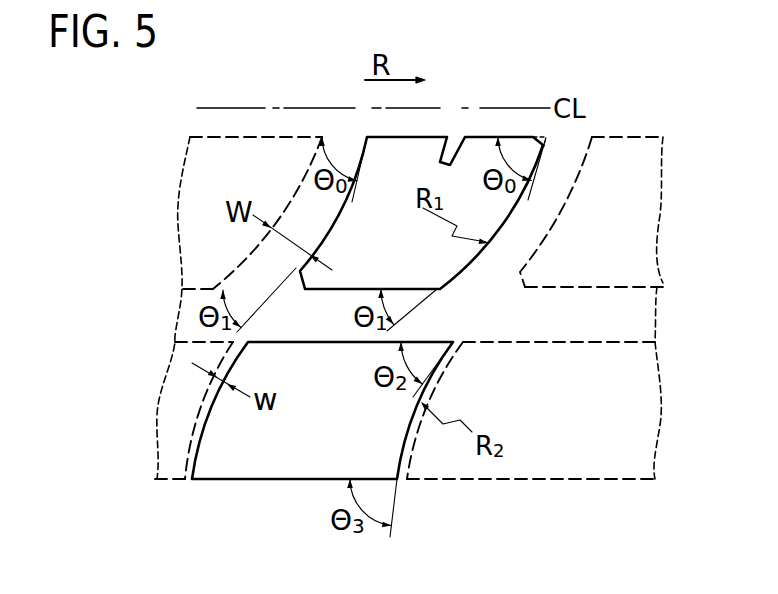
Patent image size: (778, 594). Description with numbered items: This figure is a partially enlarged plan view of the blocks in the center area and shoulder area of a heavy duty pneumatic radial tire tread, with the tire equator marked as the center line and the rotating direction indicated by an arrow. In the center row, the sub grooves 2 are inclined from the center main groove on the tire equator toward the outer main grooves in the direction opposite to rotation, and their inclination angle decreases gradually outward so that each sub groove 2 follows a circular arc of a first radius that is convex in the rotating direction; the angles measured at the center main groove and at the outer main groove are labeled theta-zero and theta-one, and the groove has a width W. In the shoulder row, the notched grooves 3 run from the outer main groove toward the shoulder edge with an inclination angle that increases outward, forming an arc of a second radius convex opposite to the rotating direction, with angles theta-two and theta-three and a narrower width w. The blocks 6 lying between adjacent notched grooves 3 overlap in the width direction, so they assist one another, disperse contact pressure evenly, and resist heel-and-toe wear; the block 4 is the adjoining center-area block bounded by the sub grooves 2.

The sub groove 2 is at (302, 218).
The notched groove 3 is at (202, 412).
The first block 4 is at (498, 207).
The block 6 is at (240, 452).